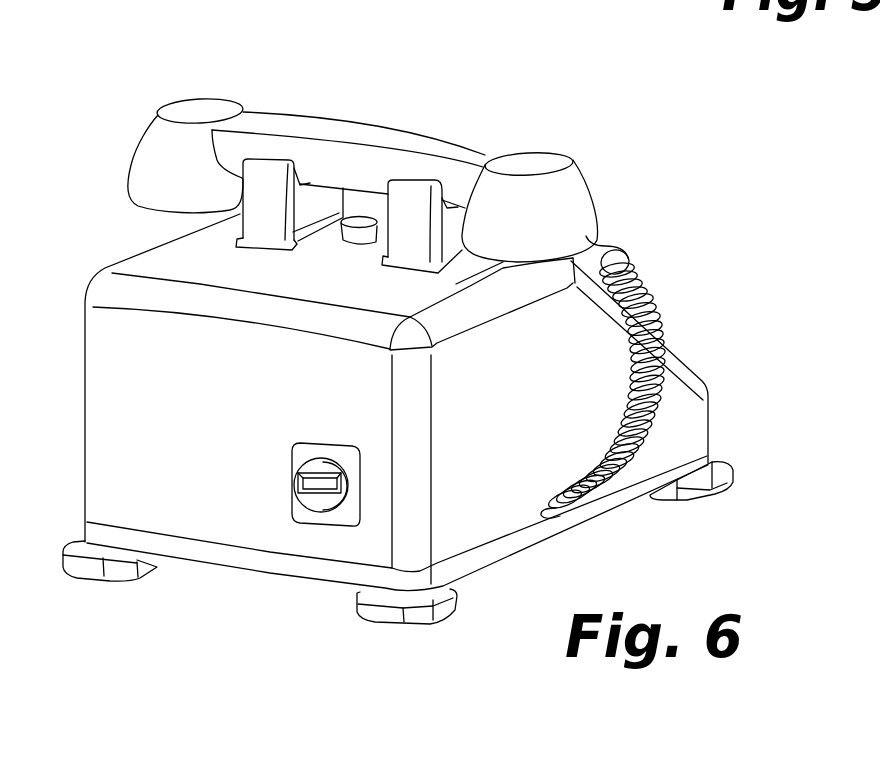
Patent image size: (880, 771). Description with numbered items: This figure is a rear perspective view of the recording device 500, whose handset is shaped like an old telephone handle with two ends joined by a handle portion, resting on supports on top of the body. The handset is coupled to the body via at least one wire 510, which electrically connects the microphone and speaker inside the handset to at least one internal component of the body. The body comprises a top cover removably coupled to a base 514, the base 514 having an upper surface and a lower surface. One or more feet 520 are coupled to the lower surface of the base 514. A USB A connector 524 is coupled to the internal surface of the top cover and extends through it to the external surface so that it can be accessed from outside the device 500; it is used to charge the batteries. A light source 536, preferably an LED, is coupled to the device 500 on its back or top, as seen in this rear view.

The recording device 500 is at (389, 81).
The wire 510 is at (648, 293).
The base 514 is at (233, 557).
The feet 520 is at (85, 570).
The USB A connector 524 is at (313, 504).
The light source 536 is at (352, 247).